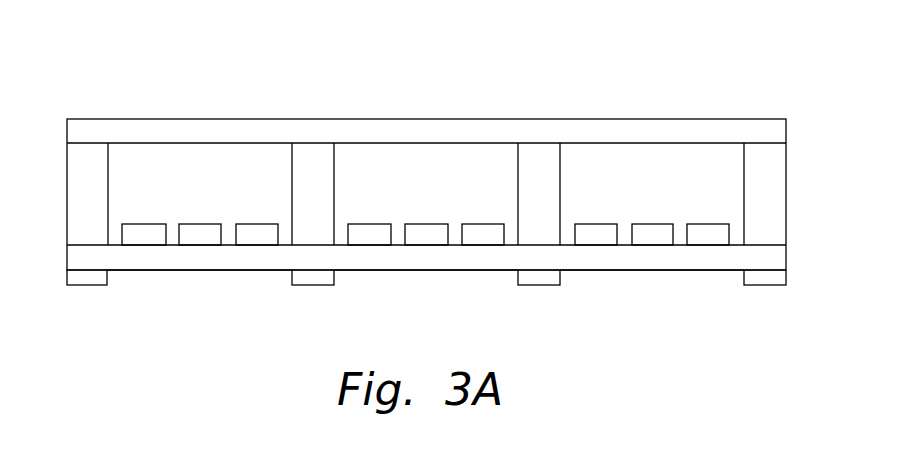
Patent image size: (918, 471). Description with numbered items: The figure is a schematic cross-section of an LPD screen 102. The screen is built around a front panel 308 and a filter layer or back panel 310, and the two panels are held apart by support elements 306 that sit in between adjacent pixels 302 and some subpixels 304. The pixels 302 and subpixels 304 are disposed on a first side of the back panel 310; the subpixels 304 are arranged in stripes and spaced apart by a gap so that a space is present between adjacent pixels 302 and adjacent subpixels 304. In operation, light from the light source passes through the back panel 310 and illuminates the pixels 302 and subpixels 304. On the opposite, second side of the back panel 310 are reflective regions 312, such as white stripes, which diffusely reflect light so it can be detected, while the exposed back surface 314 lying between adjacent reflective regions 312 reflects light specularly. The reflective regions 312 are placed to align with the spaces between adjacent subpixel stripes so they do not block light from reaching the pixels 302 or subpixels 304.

The LPD screen 102 is at (137, 25).
The pixels 302 is at (287, 212).
The subpixels 304 is at (362, 228).
The support elements 306 is at (553, 184).
The front panel 308 is at (701, 127).
The back panel 310 is at (702, 262).
The reflective regions 312 is at (88, 285).
The exposed back surface 314 is at (195, 270).